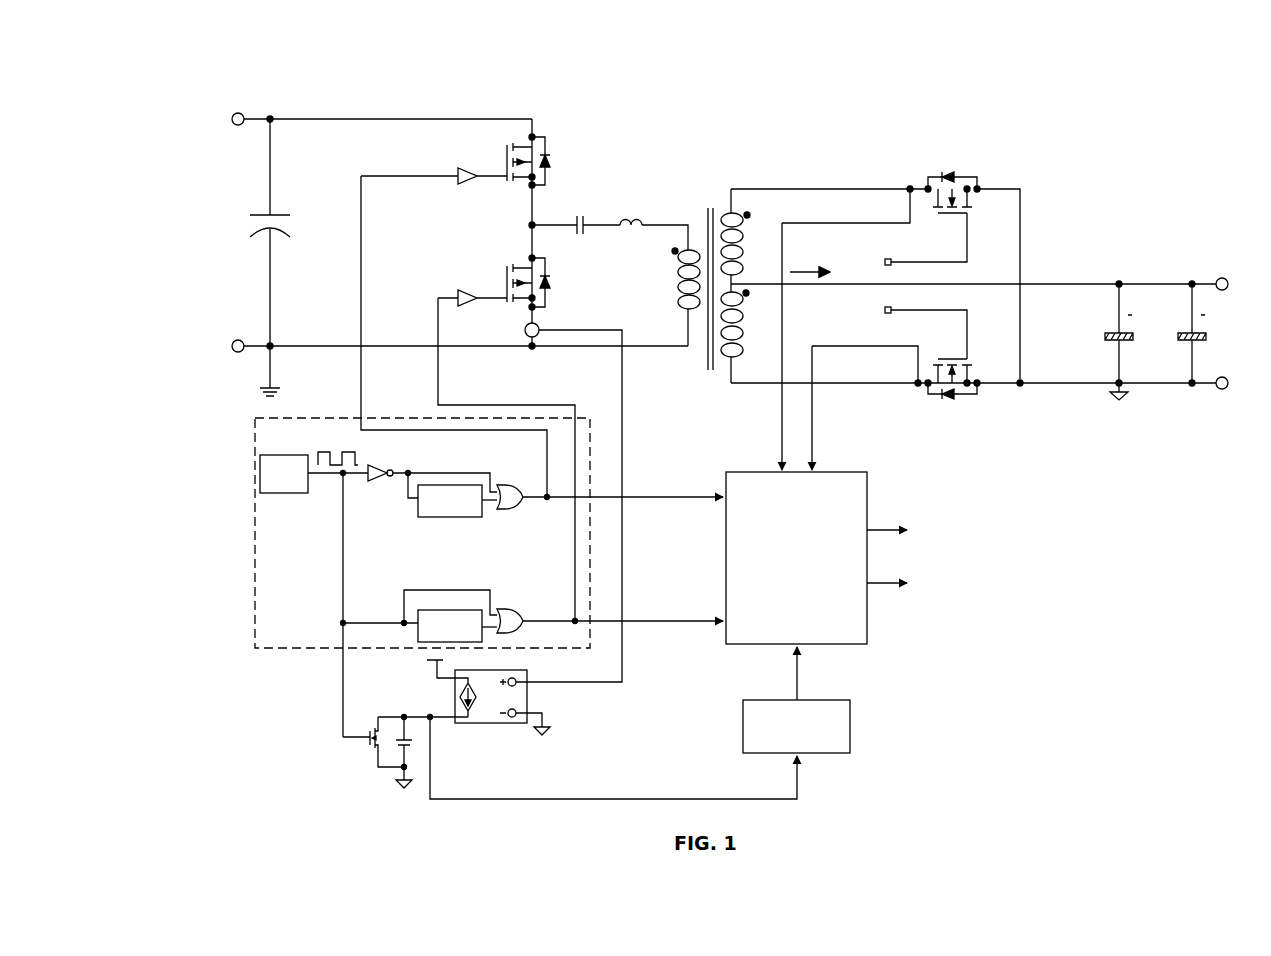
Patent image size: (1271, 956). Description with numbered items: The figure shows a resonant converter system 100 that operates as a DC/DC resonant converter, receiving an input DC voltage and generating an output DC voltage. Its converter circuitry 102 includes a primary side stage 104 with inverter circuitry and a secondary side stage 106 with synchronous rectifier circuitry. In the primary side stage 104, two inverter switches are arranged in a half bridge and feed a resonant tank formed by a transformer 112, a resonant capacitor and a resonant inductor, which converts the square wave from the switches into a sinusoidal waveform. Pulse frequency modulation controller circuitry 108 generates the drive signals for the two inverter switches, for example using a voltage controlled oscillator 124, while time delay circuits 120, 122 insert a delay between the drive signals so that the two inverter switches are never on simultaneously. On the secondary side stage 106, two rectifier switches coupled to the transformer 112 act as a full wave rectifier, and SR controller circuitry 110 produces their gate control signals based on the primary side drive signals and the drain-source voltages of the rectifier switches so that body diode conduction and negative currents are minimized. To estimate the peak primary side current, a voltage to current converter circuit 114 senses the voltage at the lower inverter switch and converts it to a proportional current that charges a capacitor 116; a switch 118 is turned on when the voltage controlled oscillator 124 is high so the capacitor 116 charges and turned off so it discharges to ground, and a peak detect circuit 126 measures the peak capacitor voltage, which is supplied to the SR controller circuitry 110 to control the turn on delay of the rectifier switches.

The resonant converter system 100 is at (630, 76).
The converter circuitry 102 is at (305, 108).
The primary side stage 104 is at (496, 110).
The secondary side stage 106 is at (831, 162).
The pulse frequency modulation controller circuitry 108 is at (303, 543).
The SR controller circuitry 110 is at (813, 558).
The transformer 112 is at (705, 190).
The voltage to current converter circuit 114 is at (476, 714).
The capacitor 116 is at (413, 752).
The switch 118 is at (373, 742).
The time delay circuit 120 is at (450, 507).
The time delay circuit 122 is at (450, 616).
The voltage controlled oscillator 124 is at (309, 464).
The peak detect circuit 126 is at (640, 723).